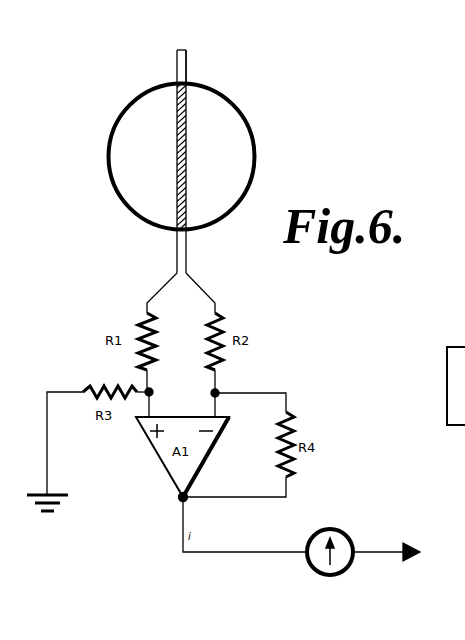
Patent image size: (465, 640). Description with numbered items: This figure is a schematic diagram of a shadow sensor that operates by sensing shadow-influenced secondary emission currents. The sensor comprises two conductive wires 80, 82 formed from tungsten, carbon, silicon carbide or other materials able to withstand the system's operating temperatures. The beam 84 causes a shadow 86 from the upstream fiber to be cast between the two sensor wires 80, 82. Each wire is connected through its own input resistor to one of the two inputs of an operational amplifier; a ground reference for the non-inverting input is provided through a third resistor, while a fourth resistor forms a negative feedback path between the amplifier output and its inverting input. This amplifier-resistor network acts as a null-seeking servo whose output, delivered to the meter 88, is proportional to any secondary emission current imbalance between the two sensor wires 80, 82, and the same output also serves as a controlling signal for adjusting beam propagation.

The conductive wire 80 is at (176, 60).
The conductive wire 82 is at (187, 58).
The beam 84 is at (110, 135).
The shadow 86 is at (188, 130).
The meter 88 is at (345, 530).